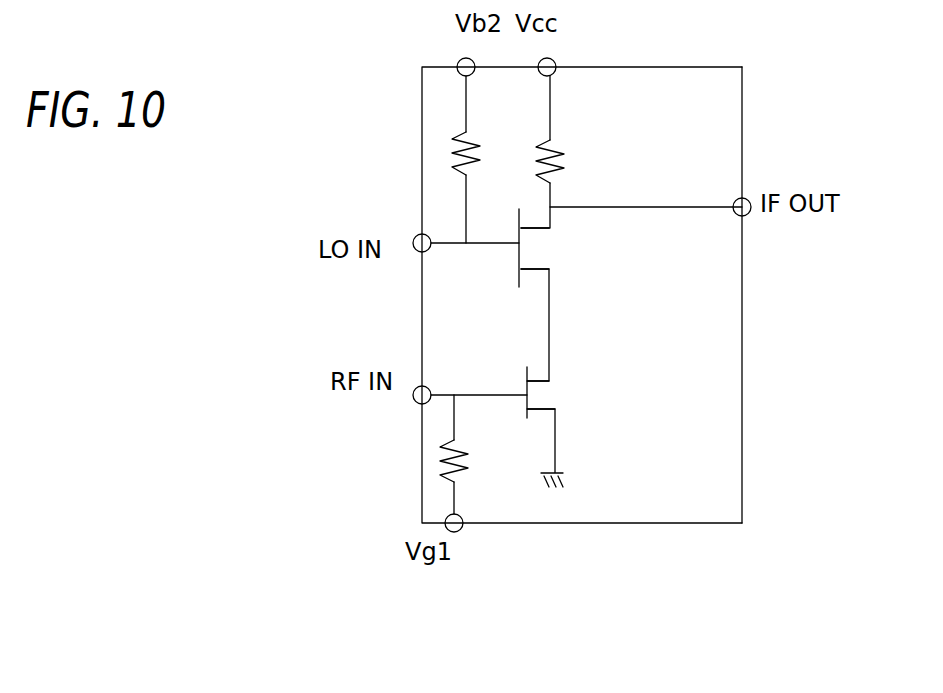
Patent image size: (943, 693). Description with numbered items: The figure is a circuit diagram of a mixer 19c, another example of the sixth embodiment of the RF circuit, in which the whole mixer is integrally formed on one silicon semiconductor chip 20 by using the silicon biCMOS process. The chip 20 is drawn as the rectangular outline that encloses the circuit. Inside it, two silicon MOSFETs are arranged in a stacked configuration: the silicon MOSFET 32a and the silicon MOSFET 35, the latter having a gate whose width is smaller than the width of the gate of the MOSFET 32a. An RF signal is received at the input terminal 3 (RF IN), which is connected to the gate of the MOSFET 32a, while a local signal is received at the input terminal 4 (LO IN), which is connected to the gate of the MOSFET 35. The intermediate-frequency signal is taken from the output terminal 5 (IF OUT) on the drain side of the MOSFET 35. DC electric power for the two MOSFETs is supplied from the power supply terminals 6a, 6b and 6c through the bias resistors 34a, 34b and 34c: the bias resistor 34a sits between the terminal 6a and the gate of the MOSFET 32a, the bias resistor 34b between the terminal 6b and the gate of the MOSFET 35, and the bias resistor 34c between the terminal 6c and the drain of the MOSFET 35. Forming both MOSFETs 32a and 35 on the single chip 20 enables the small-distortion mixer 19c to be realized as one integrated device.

The mixer 19c is at (756, 68).
The silicon semiconductor chip 20 is at (744, 452).
The power supply terminal 6b is at (457, 61).
The power supply terminal 6c is at (556, 61).
The input terminal (LO IN) 4 is at (416, 237).
The input terminal (RF IN) 3 is at (414, 400).
The output terminal (IF OUT) 5 is at (751, 211).
The power supply terminal 6a is at (459, 531).
The bias resistor 34a is at (460, 446).
The bias resistor 34b is at (468, 133).
The bias resistor 34c is at (552, 143).
The silicon MOSFET 35 is at (549, 252).
The silicon MOSFET 32a is at (552, 396).